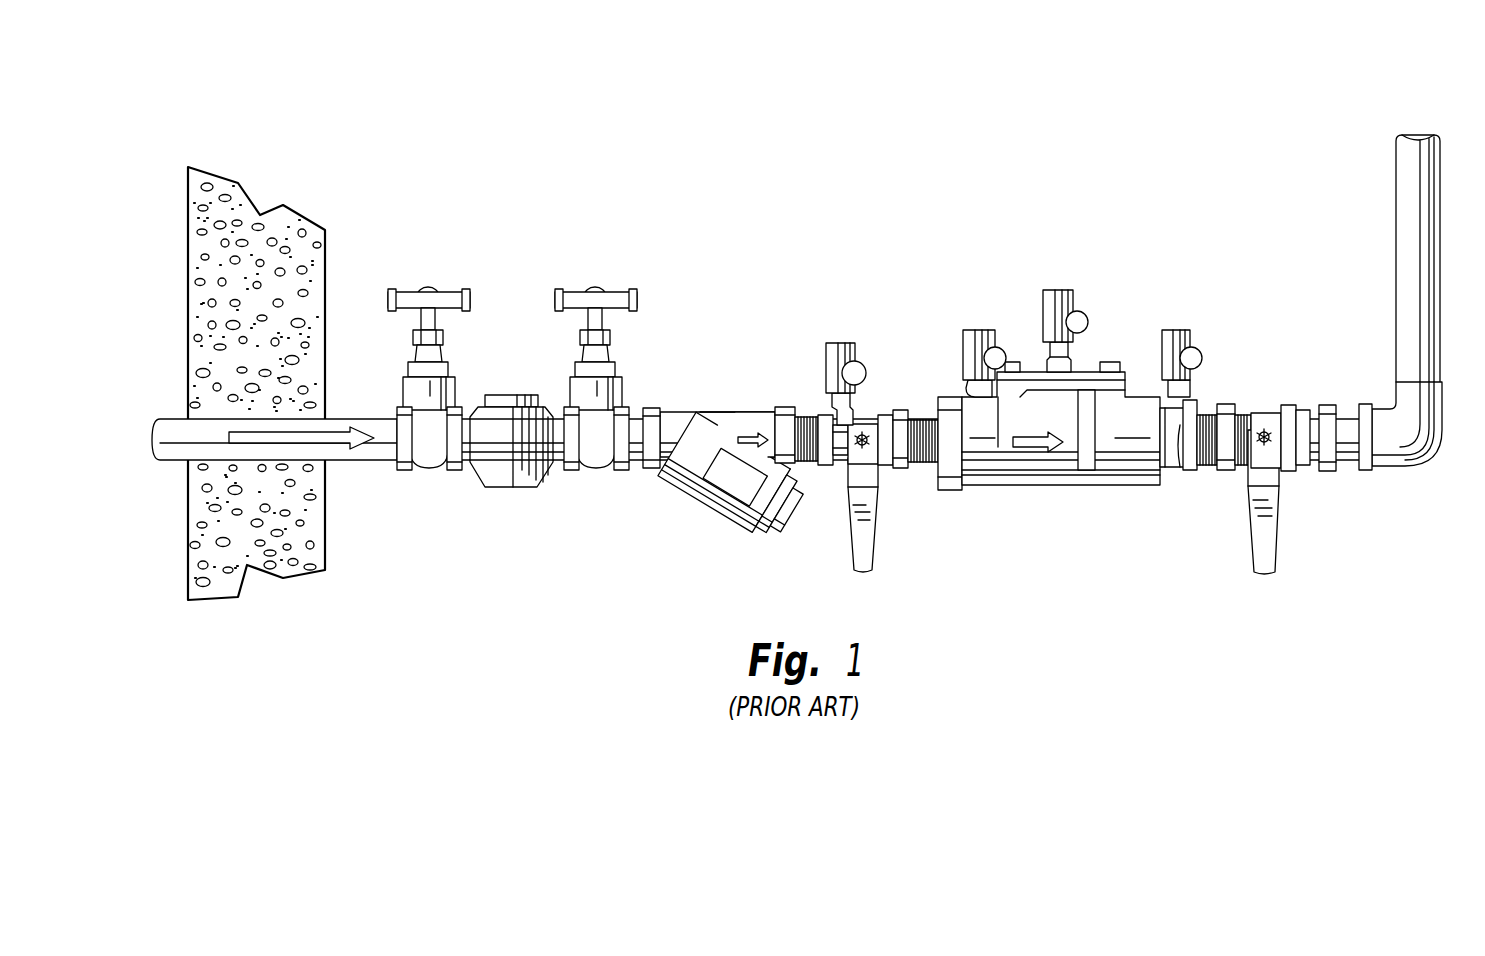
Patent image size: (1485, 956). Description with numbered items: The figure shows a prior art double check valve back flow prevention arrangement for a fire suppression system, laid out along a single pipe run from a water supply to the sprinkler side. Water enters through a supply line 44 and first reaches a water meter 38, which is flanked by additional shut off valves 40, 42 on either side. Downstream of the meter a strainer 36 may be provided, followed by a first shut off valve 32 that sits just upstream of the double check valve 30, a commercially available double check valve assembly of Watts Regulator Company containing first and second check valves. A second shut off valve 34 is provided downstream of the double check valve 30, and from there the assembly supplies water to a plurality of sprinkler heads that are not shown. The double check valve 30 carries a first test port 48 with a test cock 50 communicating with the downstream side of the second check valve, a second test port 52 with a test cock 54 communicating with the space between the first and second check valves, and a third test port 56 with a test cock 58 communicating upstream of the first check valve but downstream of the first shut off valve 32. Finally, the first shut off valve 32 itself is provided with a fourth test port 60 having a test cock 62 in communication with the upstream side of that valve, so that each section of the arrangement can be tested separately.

The double check valve 30 is at (1112, 487).
The first shut off valve 32 is at (833, 423).
The second shut off valve 34 is at (1262, 411).
The strainer 36 is at (717, 490).
The water meter 38 is at (513, 487).
The shut off valve 40 is at (427, 470).
The shut off valve 42 is at (597, 470).
The supply line 44 is at (350, 463).
The first test port 48 is at (1195, 389).
The test cock 50 is at (1175, 329).
The second test port 52 is at (1077, 358).
The test cock 54 is at (1060, 290).
The third test port 56 is at (970, 398).
The test cock 58 is at (975, 329).
The fourth test port 60 is at (857, 400).
The test cock 62 is at (833, 340).